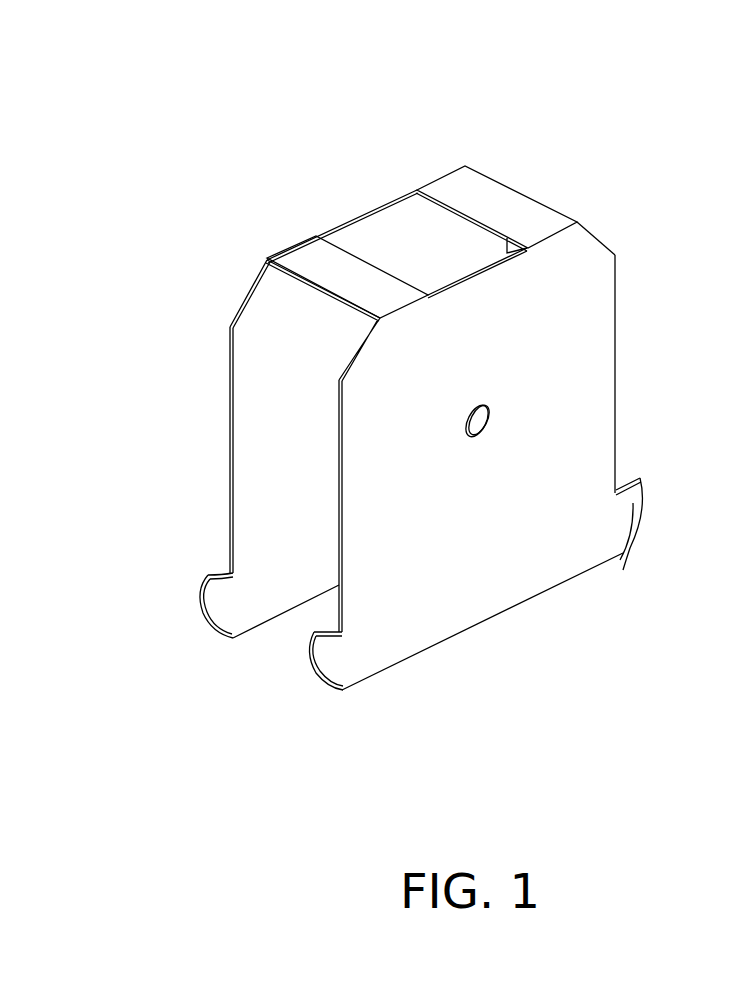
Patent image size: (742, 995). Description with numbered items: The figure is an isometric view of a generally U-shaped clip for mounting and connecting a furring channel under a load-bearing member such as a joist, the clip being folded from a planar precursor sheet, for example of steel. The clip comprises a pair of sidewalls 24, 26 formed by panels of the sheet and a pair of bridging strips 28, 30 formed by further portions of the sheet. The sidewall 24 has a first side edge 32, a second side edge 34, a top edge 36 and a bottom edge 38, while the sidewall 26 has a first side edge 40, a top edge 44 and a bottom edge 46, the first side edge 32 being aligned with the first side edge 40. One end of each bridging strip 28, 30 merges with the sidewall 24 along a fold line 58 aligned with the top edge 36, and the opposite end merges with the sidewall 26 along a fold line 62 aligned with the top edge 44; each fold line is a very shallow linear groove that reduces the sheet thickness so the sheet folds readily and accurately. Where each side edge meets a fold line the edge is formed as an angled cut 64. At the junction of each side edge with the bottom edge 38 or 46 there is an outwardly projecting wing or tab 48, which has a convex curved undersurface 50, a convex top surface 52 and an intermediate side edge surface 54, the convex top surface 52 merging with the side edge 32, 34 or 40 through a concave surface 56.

The sidewall 24 is at (598, 300).
The sidewall 26 is at (275, 365).
The bridging strip 28 is at (262, 260).
The bridging strip 30 is at (497, 195).
The first side edge 32 is at (345, 495).
The second side edge 34 is at (615, 418).
The top edge 36 is at (478, 273).
The bottom edge 38 is at (542, 600).
The first side edge 40 is at (230, 442).
The top edge 44 is at (377, 210).
The bottom edge 46 is at (300, 606).
The tab 48 is at (222, 600).
The convex curved undersurface 50 is at (220, 627).
The convex top surface 52 is at (203, 573).
The intermediate side edge surface 54 is at (198, 592).
The concave surface 56 is at (228, 575).
The fold line 58 is at (557, 231).
The fold line 62 is at (441, 178).
The angled cut 64 is at (243, 308).